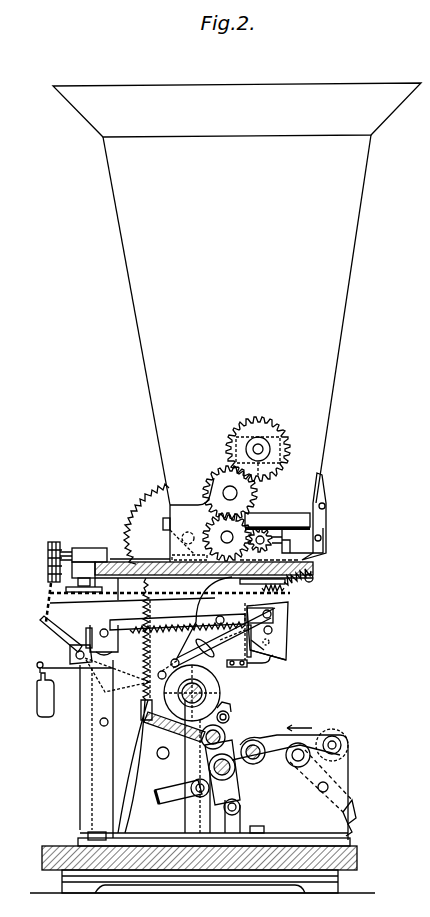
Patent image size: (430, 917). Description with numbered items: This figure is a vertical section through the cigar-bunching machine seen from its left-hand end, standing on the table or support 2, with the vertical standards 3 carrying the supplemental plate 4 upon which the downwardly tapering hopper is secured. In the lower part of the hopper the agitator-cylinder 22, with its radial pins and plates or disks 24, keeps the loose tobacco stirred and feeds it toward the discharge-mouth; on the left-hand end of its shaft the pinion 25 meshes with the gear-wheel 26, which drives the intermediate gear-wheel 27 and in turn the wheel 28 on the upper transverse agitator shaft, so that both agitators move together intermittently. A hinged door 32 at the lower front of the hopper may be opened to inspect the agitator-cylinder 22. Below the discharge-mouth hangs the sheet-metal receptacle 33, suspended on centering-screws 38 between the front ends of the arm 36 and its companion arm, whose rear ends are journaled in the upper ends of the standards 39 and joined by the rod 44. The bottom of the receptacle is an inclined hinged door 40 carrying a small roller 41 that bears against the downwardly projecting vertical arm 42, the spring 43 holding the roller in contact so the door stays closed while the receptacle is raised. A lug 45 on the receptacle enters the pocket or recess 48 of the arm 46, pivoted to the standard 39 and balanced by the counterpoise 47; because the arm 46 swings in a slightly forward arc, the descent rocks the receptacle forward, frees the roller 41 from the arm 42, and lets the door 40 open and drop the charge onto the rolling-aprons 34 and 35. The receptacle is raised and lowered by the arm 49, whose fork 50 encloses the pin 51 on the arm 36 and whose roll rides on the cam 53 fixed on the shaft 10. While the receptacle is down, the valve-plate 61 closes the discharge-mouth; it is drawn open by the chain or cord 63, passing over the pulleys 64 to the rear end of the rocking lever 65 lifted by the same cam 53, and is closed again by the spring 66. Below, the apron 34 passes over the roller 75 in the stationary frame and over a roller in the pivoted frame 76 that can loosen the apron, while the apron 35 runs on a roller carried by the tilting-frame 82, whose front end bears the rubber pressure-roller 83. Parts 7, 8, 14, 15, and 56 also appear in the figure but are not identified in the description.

The table or support 2 is at (202, 888).
The vertical standards 3 is at (141, 618).
The supplemental plate 4 is at (176, 575).
The bed 7 is at (199, 854).
The bracket 8 is at (85, 637).
The shaft 10 is at (192, 693).
The arm 14 is at (143, 766).
The ratchet wheel 15 is at (144, 513).
The agitator-cylinder 22 is at (277, 520).
The plates or disks 24 is at (258, 456).
The pinion 25 is at (265, 540).
The gear-wheel 26 is at (227, 537).
The intermediate gear-wheel 27 is at (230, 493).
The wheel 28 is at (263, 449).
The hinged door 32 is at (308, 555).
The receptacle 33 is at (274, 631).
The rolling-apron 34 is at (290, 746).
The rolling-apron 35 is at (211, 772).
The arm 36 is at (177, 623).
The centering-screws 38 is at (264, 609).
The standards 39 is at (96, 750).
The inclined door 40 is at (274, 664).
The small roller 41 is at (258, 653).
The vertical arm 42 is at (247, 655).
The spring 43 is at (232, 638).
The rod 44 is at (104, 629).
The lug 45 is at (269, 646).
The arm 46 is at (237, 671).
The counterpoise 47 is at (75, 689).
The pocket or recess 48 is at (262, 668).
The arm 49 is at (176, 664).
The fork 50 is at (208, 648).
The pin 51 is at (223, 636).
The cam 53 is at (173, 690).
The pin 56 is at (273, 631).
The valve-plate 61 is at (266, 591).
The chain or cord 63 is at (168, 601).
The pulleys 64 is at (70, 574).
The rocking arm or lever 65 is at (105, 654).
The spring 66 is at (300, 586).
The roller 75 is at (327, 793).
The pivotally-secured frame 76 is at (182, 792).
The tilting-frame 82 is at (174, 727).
The rubber pressure-roller 83 is at (230, 715).